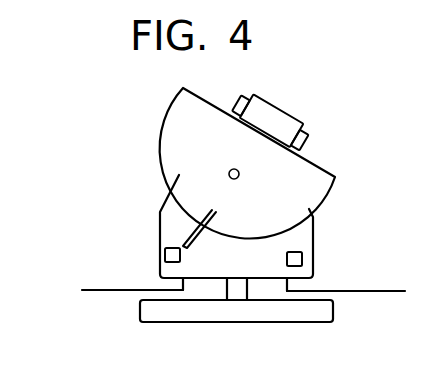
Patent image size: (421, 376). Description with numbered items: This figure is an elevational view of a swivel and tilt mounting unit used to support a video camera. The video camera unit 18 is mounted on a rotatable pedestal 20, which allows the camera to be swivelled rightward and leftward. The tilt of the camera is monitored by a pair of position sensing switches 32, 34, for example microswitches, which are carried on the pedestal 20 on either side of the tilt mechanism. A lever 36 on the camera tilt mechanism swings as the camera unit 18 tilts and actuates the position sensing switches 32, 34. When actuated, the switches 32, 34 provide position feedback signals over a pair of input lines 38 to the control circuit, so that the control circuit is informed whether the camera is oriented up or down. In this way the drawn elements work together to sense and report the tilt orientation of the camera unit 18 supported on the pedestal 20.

The video camera unit 18 is at (285, 110).
The rotatable pedestal 20 is at (314, 229).
The position sensing switch 32 is at (165, 254).
The position sensing switch 34 is at (302, 258).
The lever 36 is at (196, 224).
The input lines 38 is at (113, 290).